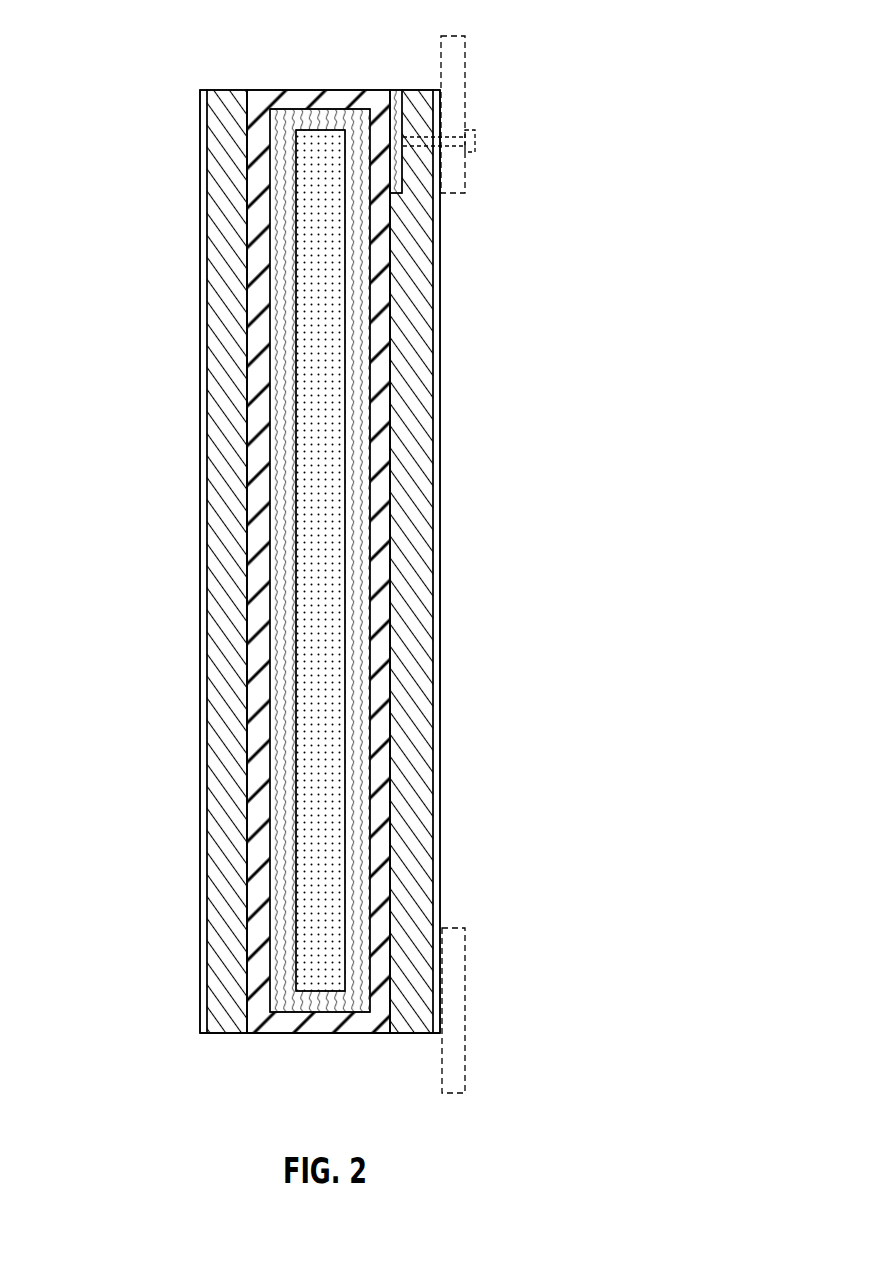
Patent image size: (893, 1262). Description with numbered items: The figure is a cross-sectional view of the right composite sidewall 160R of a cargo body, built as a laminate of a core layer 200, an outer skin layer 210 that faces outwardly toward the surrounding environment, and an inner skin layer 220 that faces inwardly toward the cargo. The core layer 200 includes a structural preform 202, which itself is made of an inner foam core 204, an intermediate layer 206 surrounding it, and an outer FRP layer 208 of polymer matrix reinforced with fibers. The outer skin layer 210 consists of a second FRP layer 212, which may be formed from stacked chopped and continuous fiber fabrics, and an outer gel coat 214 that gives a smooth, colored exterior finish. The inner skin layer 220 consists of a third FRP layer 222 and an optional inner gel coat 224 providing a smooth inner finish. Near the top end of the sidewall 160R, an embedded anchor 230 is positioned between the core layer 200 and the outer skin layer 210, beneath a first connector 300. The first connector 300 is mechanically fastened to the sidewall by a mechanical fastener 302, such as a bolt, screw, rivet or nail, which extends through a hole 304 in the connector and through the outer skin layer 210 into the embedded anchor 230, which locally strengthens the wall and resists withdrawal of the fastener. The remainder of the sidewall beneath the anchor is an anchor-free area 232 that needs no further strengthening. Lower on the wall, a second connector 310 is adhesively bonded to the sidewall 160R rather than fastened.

The composite sidewall 160R is at (150, 134).
The core layer 200 is at (390, 68).
The preform 202 is at (255, 1049).
The inner foam core 204 is at (312, 538).
The intermediate layer 206 is at (283, 577).
The outer FRP layer 208 is at (260, 628).
The outer skin layer 210 is at (440, 68).
The FRP layer 212 is at (413, 423).
The outer gel coat 214 is at (442, 460).
The inner skin layer 220 is at (246, 68).
The FRP layer 222 is at (223, 927).
The inner gel coat 224 is at (203, 963).
The embedded anchor 230 is at (392, 195).
The anchor-free area 232 is at (463, 643).
The first connector 300 is at (495, 135).
The mechanical fastener 302 is at (476, 146).
The hole 304 is at (458, 125).
The second connector 310 is at (468, 968).